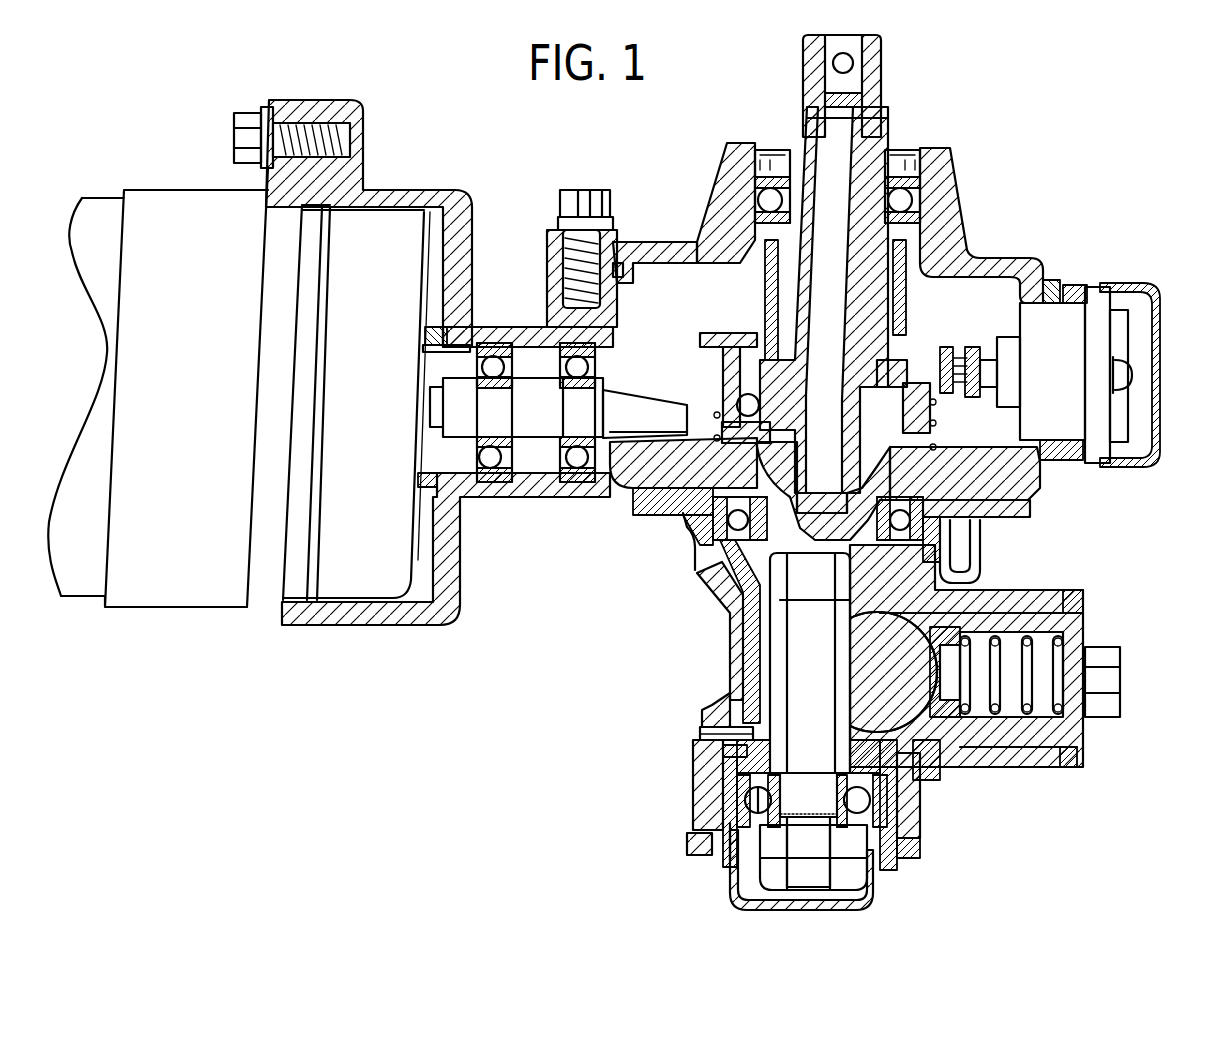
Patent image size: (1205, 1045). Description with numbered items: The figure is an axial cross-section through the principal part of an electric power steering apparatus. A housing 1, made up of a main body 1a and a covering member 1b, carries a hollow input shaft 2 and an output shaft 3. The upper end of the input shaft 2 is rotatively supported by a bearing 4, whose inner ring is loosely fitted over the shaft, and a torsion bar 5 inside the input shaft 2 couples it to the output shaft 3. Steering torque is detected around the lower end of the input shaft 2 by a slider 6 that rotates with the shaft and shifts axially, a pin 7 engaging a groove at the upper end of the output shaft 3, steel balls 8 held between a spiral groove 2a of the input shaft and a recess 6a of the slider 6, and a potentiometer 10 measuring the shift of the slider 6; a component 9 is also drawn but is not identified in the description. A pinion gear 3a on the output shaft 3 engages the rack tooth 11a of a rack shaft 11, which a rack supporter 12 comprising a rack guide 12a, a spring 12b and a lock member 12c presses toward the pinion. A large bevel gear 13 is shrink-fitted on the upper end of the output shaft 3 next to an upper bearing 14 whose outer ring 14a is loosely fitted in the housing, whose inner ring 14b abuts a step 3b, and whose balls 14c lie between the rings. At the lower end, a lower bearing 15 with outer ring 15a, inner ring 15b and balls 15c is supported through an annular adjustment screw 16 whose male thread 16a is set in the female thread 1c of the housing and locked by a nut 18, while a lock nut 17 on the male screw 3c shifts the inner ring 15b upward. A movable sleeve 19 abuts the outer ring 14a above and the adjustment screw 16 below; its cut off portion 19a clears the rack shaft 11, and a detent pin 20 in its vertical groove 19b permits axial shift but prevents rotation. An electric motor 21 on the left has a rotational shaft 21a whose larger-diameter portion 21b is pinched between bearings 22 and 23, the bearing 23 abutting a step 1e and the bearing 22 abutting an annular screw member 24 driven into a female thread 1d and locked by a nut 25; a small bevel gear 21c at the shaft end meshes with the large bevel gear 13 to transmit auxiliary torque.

The housing 1 is at (478, 206).
The main body 1a is at (450, 190).
The covering member 1b is at (650, 242).
The female thread 1c is at (913, 817).
The female thread 1d is at (488, 322).
The step 1e is at (587, 320).
The input shaft 2 is at (870, 83).
The spiral groove 2a is at (713, 380).
The output shaft 3 is at (769, 557).
The pinion gear 3a is at (785, 665).
The step 3b is at (1040, 483).
The male screw 3c is at (860, 893).
The bearing 4 is at (905, 206).
The torsion bar 5 is at (833, 138).
The slider 6 is at (772, 287).
The recess 6a is at (688, 465).
The pin 7 is at (907, 397).
The steel balls 8 is at (736, 400).
The worm 9 is at (686, 396).
The potentiometer 10 is at (1060, 323).
The rack shaft 11 is at (915, 700).
The rack tooth 11a is at (838, 683).
The rack supporter 12 is at (1096, 612).
The rack guide 12a is at (987, 620).
The spring 12b is at (1033, 713).
The lock member 12c is at (1107, 680).
The large bevel gear 13 is at (633, 505).
The upper bearing 14 is at (1120, 492).
The outer ring 14a is at (925, 515).
The inner ring 14b is at (980, 550).
The balls 14c is at (957, 533).
The lower bearing 15 is at (578, 770).
The outer ring 15a is at (735, 780).
The inner ring 15b is at (755, 827).
The balls 15c is at (765, 815).
The adjustment screw 16 is at (722, 862).
The male thread 16a is at (745, 888).
The lock nut 17 is at (837, 875).
The nut 18 is at (920, 850).
The movable sleeve 19 is at (745, 622).
The cut off portion 19a is at (912, 745).
The vertical groove 19b is at (740, 749).
The detent pin 20 is at (713, 733).
The electric motor 21 is at (200, 590).
The rotational shaft 21a is at (411, 463).
The portion having a larger diameter 21b is at (543, 432).
The small bevel gear 21c is at (615, 390).
The bearing 22 is at (493, 480).
The bearing 23 is at (576, 480).
The annular screw member 24 is at (423, 350).
The nut 25 is at (425, 330).